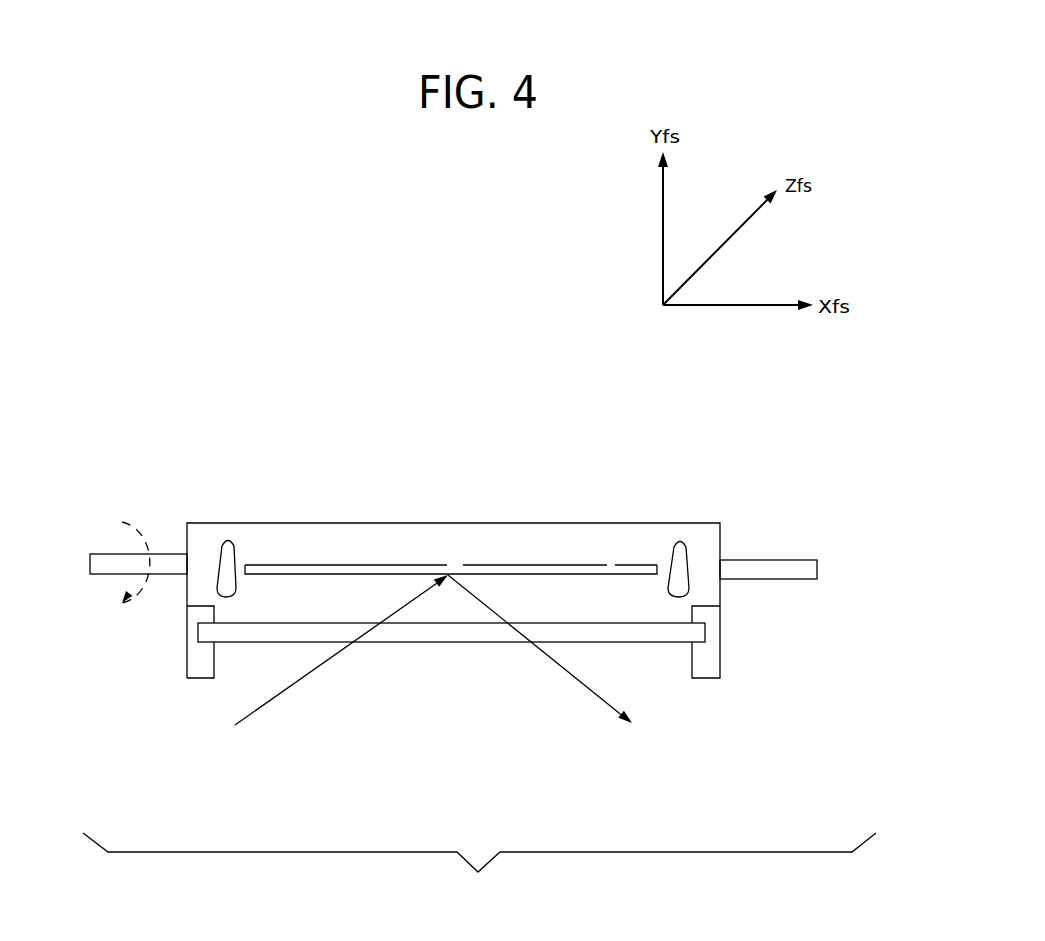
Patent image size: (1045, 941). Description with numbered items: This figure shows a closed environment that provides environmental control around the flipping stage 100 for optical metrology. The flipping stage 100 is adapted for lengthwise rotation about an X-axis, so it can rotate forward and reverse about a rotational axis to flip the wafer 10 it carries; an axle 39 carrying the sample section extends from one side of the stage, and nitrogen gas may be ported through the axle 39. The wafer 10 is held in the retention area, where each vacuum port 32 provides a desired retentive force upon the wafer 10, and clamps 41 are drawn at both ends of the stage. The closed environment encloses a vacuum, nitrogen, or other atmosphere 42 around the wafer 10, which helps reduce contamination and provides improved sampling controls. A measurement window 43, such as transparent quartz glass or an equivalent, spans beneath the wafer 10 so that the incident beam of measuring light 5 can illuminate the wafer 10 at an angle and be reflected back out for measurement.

The flipping stage 100 is at (466, 659).
The atmosphere 42 is at (372, 597).
The clips 41 is at (227, 548).
The vacuum port 32 is at (607, 562).
The wafer 10 is at (517, 565).
The measurement window 43 is at (458, 632).
The axle 39 is at (798, 568).
The measuring light 5 is at (377, 681).